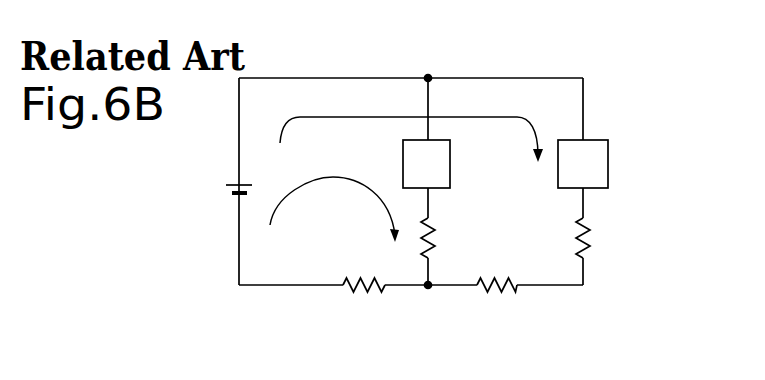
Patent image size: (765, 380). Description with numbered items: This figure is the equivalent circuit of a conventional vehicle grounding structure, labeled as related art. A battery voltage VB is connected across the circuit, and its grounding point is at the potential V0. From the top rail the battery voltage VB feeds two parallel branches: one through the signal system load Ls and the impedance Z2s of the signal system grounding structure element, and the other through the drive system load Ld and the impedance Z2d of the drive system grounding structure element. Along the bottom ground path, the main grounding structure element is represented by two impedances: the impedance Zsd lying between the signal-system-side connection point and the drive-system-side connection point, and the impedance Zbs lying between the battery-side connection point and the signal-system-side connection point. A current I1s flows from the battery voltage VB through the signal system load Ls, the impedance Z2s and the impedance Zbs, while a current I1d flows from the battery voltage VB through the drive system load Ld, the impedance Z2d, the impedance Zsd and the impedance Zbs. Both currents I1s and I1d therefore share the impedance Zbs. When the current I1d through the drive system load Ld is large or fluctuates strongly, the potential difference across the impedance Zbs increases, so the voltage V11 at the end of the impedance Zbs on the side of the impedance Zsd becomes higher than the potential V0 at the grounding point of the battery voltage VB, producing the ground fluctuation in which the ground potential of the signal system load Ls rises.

The battery voltage VB is at (227, 191).
The potential at the grounding point of the battery voltage V0 is at (239, 285).
The voltage of the impedance ZBs on the side of the impedance Zsd V11 is at (428, 296).
The signal system load Ls is at (426, 164).
The drive system load Ld is at (583, 164).
The impedance of the signal system grounding structure element Z2s is at (446, 238).
The impedance of the drive system grounding structure element Z2d is at (602, 238).
The impedance of the main grounding structure element between battery side and signa Zbs is at (364, 303).
The impedance of the main grounding structure element between signal system side and Zsd is at (497, 303).
The current flowing through the signal system load I1s is at (334, 209).
The current flowing through the drive system load I1d is at (411, 149).